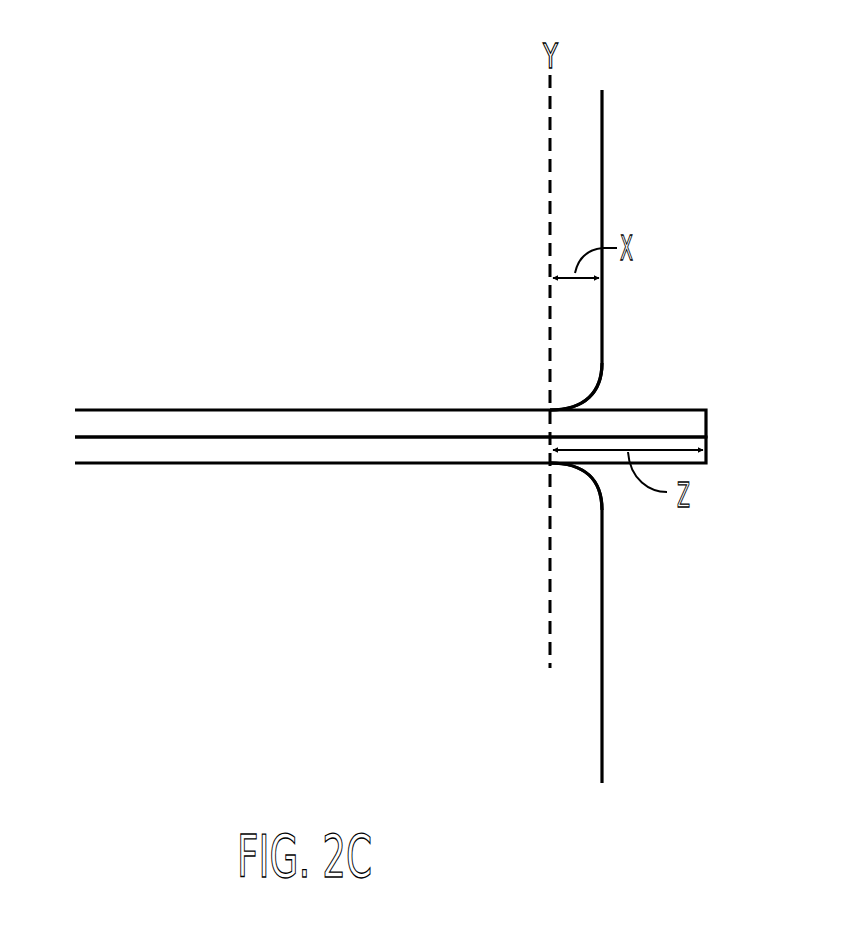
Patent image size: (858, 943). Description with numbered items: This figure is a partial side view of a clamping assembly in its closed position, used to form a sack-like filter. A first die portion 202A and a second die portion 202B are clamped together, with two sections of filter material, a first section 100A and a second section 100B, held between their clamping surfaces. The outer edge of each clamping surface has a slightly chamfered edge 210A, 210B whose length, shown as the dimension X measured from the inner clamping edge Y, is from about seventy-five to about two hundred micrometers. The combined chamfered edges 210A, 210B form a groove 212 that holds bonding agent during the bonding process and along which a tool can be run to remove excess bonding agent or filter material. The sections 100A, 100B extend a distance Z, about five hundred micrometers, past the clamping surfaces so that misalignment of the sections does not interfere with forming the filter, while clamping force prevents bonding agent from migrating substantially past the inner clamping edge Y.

The first die portion 202A is at (577, 181).
The second die portion 202B is at (580, 620).
The chamfered edge 210A is at (592, 393).
The chamfered edge 210B is at (597, 482).
The groove 212 is at (646, 396).
The first section 100A is at (692, 421).
The second section 100B is at (683, 463).